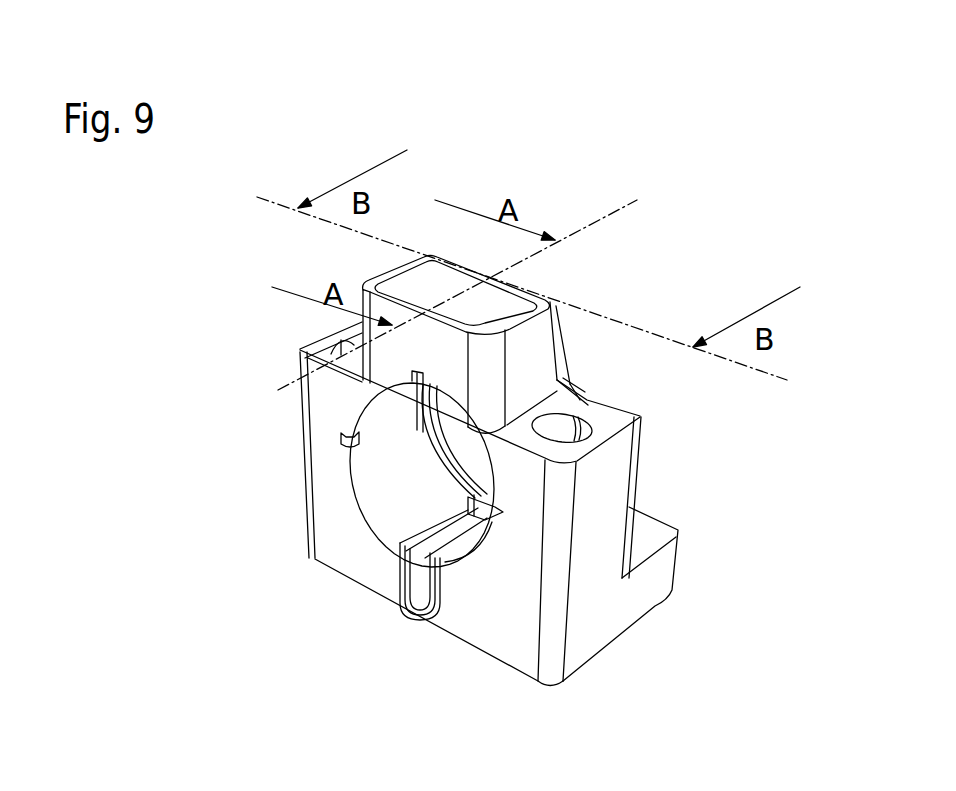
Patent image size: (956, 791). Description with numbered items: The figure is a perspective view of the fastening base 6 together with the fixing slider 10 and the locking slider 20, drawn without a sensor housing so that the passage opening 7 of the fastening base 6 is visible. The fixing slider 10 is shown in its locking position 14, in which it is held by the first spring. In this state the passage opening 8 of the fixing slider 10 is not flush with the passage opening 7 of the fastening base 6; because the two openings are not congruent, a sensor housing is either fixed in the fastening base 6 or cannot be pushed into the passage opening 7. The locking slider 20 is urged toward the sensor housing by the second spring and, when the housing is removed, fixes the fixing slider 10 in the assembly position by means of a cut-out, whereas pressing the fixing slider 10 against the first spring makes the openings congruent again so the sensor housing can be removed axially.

The fastening base 6 is at (620, 613).
The passage opening of the fastening base 7 is at (371, 487).
The passage opening of the fixing slider 8 is at (420, 423).
The fixing slider 10 is at (453, 477).
The locking position 14 is at (617, 297).
The locking slider 20 is at (430, 532).